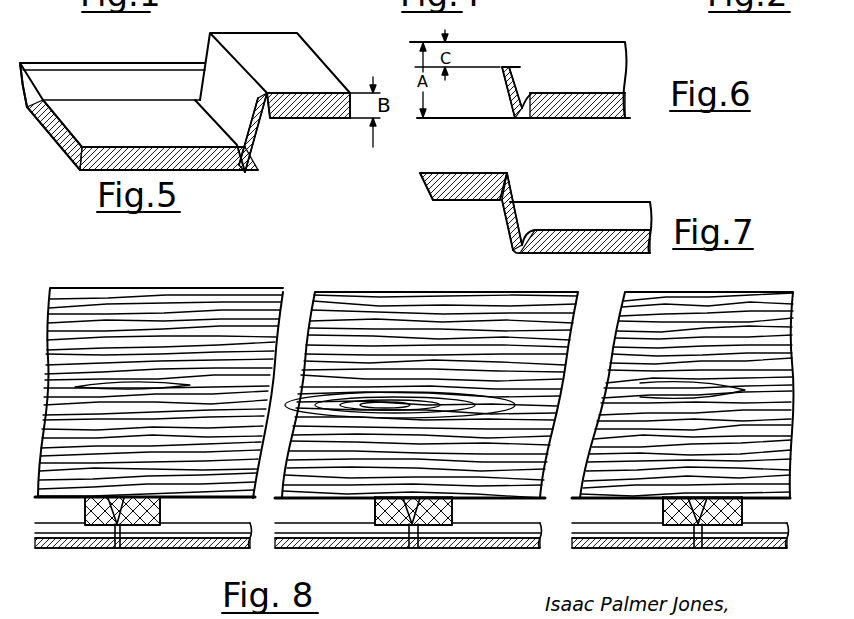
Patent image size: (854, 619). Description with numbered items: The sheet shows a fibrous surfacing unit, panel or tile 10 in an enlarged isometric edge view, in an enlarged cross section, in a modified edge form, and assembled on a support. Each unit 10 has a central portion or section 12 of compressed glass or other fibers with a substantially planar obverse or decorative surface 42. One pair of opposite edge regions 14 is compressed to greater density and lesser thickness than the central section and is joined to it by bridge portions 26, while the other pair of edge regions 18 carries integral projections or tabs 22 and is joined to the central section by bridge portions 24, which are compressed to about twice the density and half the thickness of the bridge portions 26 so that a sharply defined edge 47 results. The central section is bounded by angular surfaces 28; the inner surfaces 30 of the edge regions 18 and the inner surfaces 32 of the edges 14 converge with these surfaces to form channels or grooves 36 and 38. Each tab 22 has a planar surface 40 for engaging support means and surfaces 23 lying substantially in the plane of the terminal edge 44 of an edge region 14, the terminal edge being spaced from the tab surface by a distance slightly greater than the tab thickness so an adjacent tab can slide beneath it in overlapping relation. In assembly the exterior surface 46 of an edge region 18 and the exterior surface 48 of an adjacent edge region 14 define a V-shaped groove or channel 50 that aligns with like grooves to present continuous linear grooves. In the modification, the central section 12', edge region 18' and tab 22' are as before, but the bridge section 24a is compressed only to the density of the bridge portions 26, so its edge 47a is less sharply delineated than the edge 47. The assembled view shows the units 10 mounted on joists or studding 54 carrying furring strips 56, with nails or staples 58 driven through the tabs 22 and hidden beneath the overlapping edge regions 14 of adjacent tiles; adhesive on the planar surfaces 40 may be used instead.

In FIG. 5, the unit, panel or tile 10 is at (174, 63).
In FIG. 6, the unit, panel or tile 10 is at (575, 44).
In FIG. 8, the unit, panel or tile 10 is at (117, 530).
In FIG. 5, the central portion or section 12 is at (139, 134).
In FIG. 6, the central portion or section 12 is at (584, 84).
In FIG. 8, the central portion or section 12 is at (416, 552).
In FIG. 5, the edge regions 14 is at (124, 64).
In FIG. 6, the edge regions 14 is at (507, 82).
In FIG. 8, the edge regions 14 is at (438, 534).
In FIG. 5, the edge regions 18 is at (275, 132).
In FIG. 8, the edge regions 18 is at (475, 543).
In FIG. 5, the projections or tabs 22 is at (320, 131).
In FIG. 5, the surfaces of the tabs 23 is at (292, 112).
In FIG. 5, the bridge portions 24 is at (245, 174).
In FIG. 6, the bridge portions 26 is at (527, 118).
In FIG. 5, the angular surfaces 28 is at (45, 100).
In FIG. 6, the angular surfaces 28 is at (534, 94).
In FIG. 5, the inner surfaces of the edge regions 18 30 is at (240, 143).
In FIG. 7, the inner surfaces of the edge regions 18 30 is at (537, 227).
In FIG. 6, the inner surfaces of the edges 14 32 is at (525, 97).
In FIG. 5, the channels or grooves 36 is at (236, 136).
In FIG. 6, the channels or grooves 38 is at (537, 92).
In FIG. 5, the planar surface of the tab 40 is at (303, 52).
In FIG. 6, the planar surface of the tab 40 is at (625, 42).
In FIG. 5, the obverse or decorative surface 42 is at (203, 173).
In FIG. 6, the obverse or decorative surface 42 is at (598, 119).
In FIG. 5, the terminal edge 44 is at (80, 63).
In FIG. 6, the terminal edge 44 is at (507, 67).
In FIG. 5, the exterior surface of the edge regions 18 46 is at (268, 157).
In FIG. 5, the edge 47 is at (257, 174).
In FIG. 6, the exterior surface of the edge regions 14 48 is at (512, 102).
In FIG. 8, the V-shaped groove or channel 50 is at (118, 549).
In FIG. 8, the joists or studding 54 is at (378, 292).
In FIG. 8, the furring strips 56 is at (105, 500).
In FIG. 8, the nails or staples 58 is at (103, 505).
In FIG. 7, the tab 22' is at (442, 189).
In FIG. 7, the edge region 18' is at (486, 211).
In FIG. 7, the edge 47a is at (510, 253).
In FIG. 7, the bridge section 24a is at (533, 247).
In FIG. 7, the central section 12' is at (581, 216).